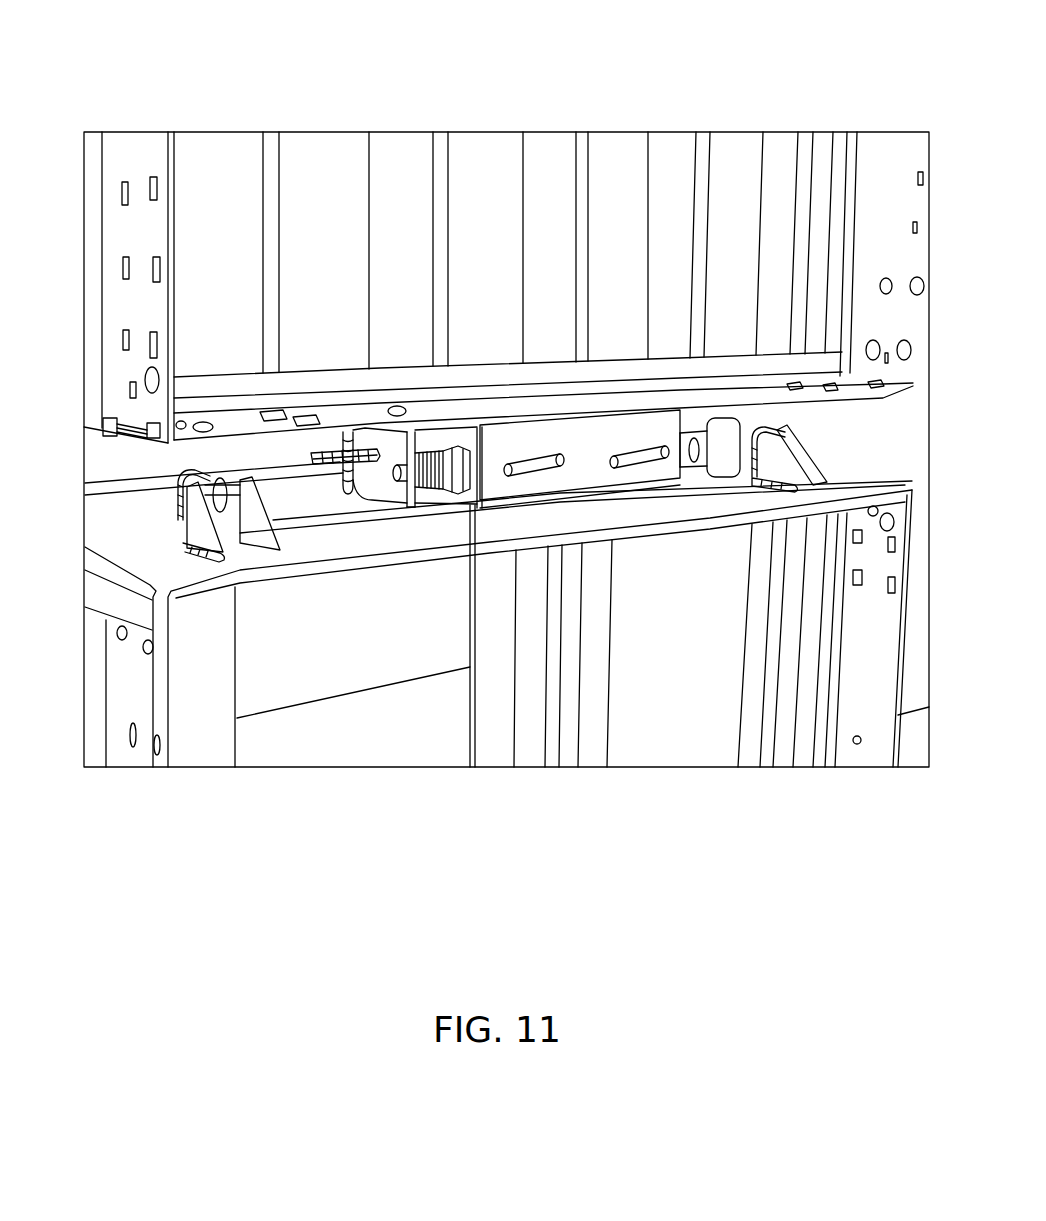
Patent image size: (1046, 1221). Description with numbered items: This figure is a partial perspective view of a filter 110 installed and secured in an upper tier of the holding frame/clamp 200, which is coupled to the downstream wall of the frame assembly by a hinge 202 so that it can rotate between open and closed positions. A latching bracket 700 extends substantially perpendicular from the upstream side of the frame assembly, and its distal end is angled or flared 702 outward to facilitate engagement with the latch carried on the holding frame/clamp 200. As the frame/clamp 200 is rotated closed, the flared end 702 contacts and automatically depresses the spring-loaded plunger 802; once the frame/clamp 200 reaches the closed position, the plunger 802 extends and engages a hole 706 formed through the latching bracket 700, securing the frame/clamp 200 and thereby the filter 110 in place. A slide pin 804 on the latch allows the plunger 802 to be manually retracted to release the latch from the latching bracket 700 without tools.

The filter 110 is at (483, 178).
The holding frame/clamp 200 is at (135, 163).
The hinge 202 is at (822, 452).
The latching bracket 700 is at (358, 505).
The flared end 702 is at (410, 503).
The hole 706 is at (702, 458).
The spring-loaded plunger 802 is at (397, 477).
The slide pin 804 is at (524, 472).